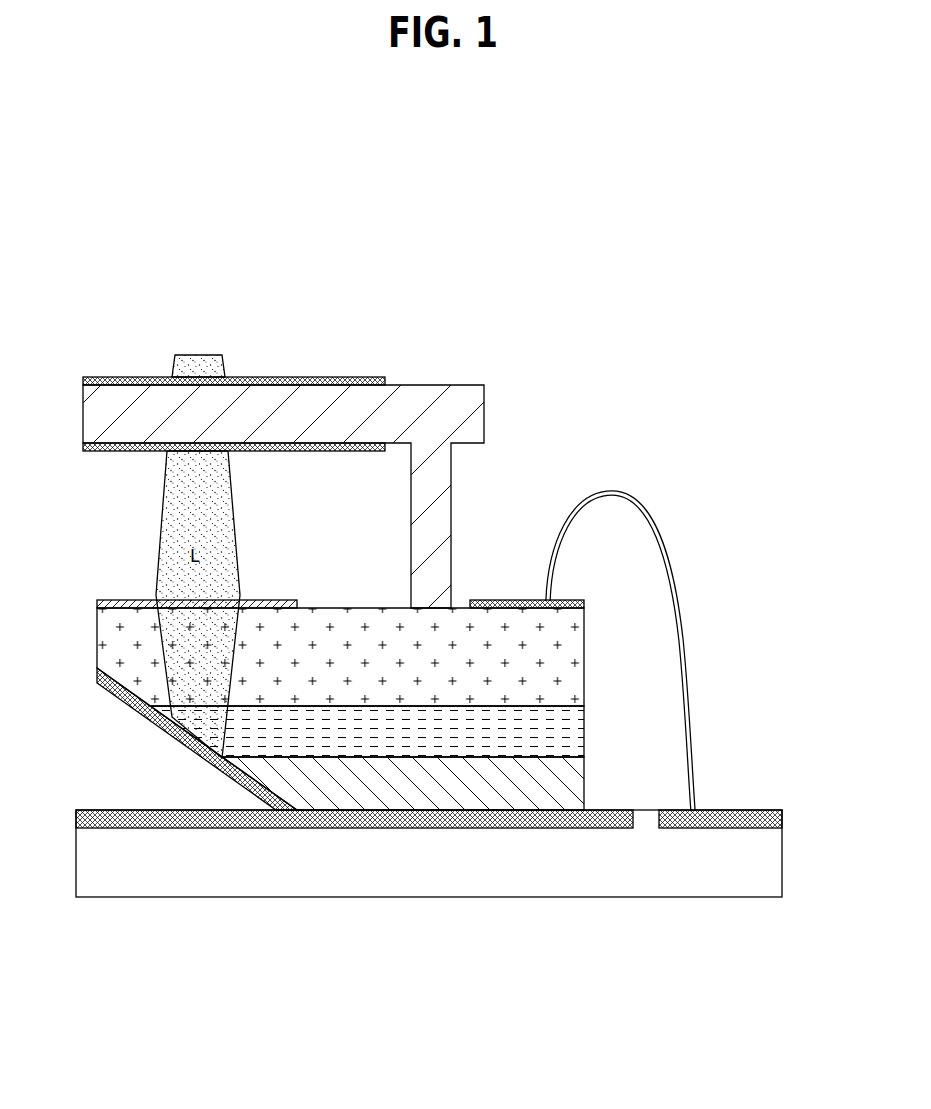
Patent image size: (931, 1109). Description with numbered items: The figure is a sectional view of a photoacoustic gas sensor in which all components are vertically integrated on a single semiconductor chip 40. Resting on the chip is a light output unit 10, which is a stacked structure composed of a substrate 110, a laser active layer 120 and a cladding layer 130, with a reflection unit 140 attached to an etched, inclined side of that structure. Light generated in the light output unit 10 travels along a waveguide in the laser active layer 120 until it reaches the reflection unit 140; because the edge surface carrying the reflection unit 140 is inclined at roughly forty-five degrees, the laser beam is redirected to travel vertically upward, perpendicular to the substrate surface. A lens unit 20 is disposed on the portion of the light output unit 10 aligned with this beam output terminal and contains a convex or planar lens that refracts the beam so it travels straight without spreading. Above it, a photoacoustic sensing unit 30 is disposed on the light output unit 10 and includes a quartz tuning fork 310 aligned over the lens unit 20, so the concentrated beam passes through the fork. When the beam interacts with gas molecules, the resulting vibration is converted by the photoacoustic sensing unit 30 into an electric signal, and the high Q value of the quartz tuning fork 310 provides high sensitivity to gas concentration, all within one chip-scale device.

The light output unit 10 is at (372, 709).
The substrate 110 is at (340, 657).
The laser active layer 120 is at (367, 731).
The cladding layer 130 is at (403, 783).
The reflection unit 140 is at (163, 731).
The lens unit 20 is at (117, 600).
The photoacoustic sensing unit 30 is at (484, 392).
The quartz tuning fork 310 is at (122, 377).
The semiconductor chip 40 is at (777, 862).